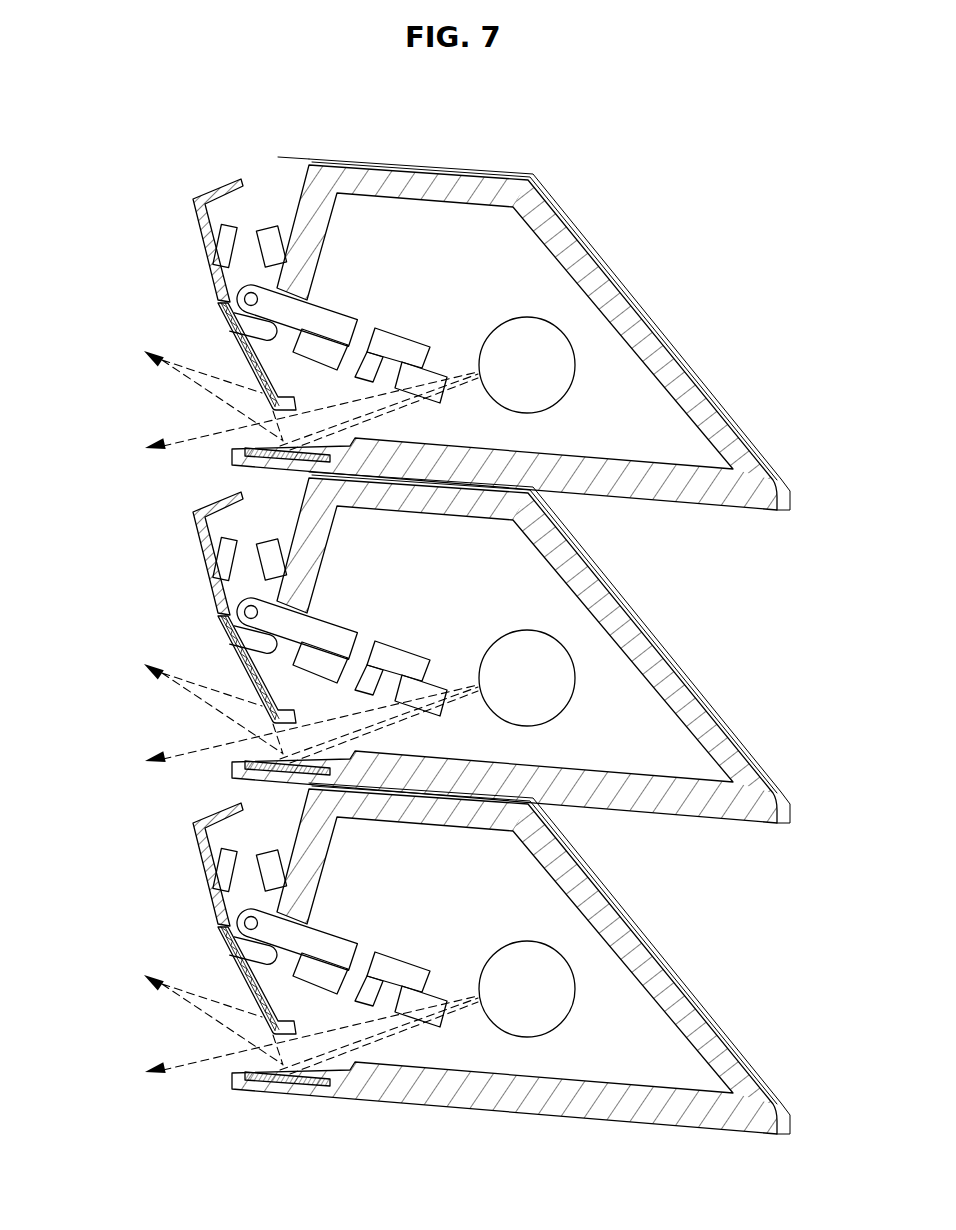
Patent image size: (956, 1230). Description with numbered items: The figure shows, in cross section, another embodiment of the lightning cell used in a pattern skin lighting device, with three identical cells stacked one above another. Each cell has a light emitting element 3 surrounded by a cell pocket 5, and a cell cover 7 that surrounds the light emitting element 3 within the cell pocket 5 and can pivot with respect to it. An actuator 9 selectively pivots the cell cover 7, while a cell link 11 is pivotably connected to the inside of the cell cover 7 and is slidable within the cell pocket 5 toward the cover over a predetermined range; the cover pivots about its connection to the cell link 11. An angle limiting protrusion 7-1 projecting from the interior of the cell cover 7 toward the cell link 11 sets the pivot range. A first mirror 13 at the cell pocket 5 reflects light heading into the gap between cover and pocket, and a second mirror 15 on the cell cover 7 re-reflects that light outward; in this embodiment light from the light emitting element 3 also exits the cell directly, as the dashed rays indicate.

The light emitting element 3 is at (555, 688).
The cell pocket 5 is at (640, 628).
The cell cover 7 is at (197, 528).
The angle limiting protrusion 7-1 is at (263, 643).
The actuator 9 is at (272, 548).
The cell link 11 is at (327, 618).
The first mirror 13 is at (253, 778).
The second mirror 15 is at (240, 660).